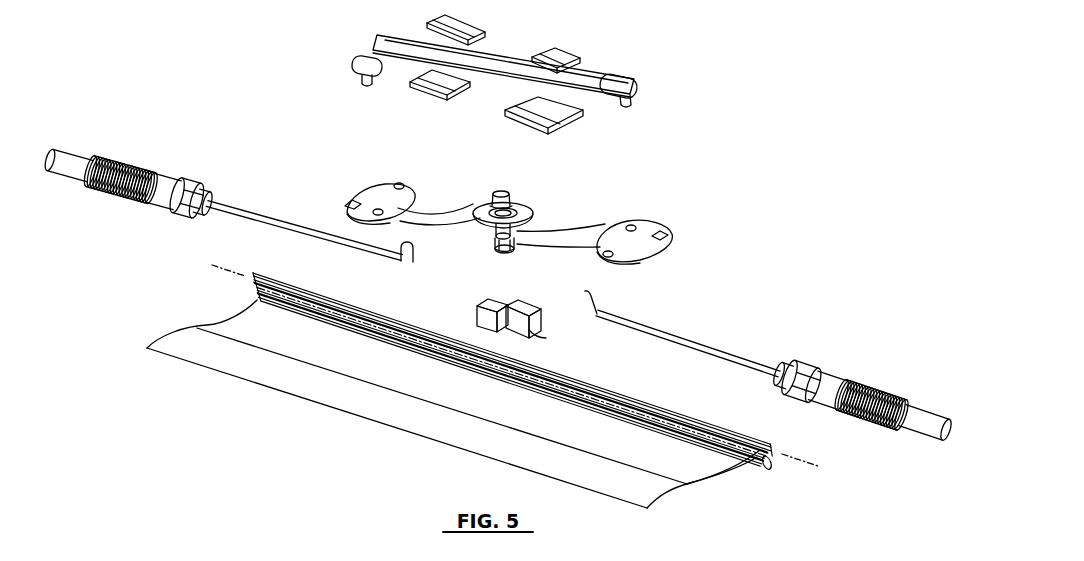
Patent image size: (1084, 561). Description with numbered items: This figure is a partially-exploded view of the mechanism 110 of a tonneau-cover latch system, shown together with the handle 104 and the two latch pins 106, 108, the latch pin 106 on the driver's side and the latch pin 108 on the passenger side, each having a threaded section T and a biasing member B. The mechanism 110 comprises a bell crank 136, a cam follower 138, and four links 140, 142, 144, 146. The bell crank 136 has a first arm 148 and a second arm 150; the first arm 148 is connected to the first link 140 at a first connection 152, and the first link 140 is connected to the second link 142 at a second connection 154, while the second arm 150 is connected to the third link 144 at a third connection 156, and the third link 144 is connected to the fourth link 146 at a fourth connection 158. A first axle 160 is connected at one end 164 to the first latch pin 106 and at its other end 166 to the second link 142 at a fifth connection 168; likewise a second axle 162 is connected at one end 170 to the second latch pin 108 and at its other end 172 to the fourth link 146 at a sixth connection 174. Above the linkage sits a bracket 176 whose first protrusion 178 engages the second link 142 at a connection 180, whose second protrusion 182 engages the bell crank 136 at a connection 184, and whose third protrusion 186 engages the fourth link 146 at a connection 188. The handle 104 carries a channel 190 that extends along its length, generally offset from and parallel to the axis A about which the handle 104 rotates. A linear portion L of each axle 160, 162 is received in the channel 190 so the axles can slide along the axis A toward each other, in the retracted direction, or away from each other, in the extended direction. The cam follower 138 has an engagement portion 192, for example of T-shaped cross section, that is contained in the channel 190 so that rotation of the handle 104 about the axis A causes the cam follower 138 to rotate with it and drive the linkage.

The handle 104 is at (363, 393).
The latch pin 106 is at (62, 150).
The latch pin 108 is at (923, 412).
The mechanism 110 is at (690, 84).
The bell crank 136 is at (534, 202).
The cam follower 138 is at (472, 305).
The first link 140 is at (430, 214).
The second link 142 is at (378, 190).
The third link 144 is at (588, 229).
The fourth link 146 is at (639, 253).
The first arm 148 is at (510, 198).
The second arm 150 is at (494, 230).
The first connection 152 is at (498, 191).
The second connection 154 is at (352, 203).
The third connection 156 is at (509, 248).
The fourth connection 158 is at (652, 236).
The first axle 160 is at (237, 207).
The second axle 162 is at (665, 332).
The end 164 is at (196, 214).
The end 166 is at (413, 264).
The fifth connection 168 is at (399, 180).
The end 170 is at (779, 368).
The end 172 is at (595, 297).
The sixth connection 174 is at (600, 248).
The bracket 176 is at (497, 58).
The first protrusion 178 is at (362, 80).
The connection 180 is at (378, 213).
The second protrusion 182 is at (491, 84).
The connection 184 is at (521, 211).
The third protrusion 186 is at (628, 99).
The connection 188 is at (632, 226).
The channel 190 is at (697, 407).
The engagement portion 192 is at (540, 334).